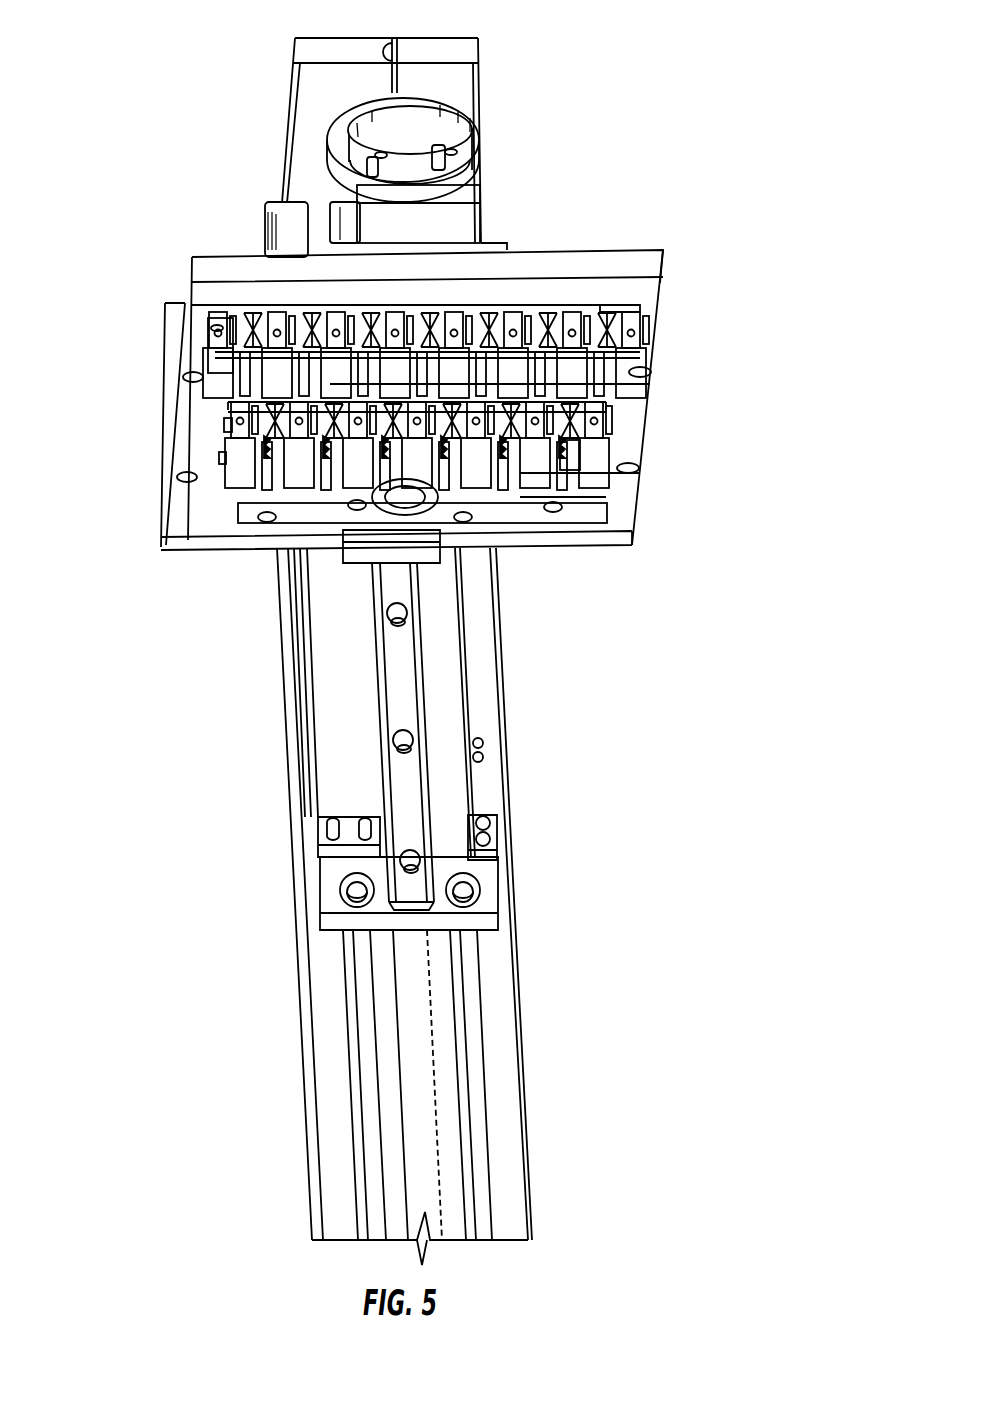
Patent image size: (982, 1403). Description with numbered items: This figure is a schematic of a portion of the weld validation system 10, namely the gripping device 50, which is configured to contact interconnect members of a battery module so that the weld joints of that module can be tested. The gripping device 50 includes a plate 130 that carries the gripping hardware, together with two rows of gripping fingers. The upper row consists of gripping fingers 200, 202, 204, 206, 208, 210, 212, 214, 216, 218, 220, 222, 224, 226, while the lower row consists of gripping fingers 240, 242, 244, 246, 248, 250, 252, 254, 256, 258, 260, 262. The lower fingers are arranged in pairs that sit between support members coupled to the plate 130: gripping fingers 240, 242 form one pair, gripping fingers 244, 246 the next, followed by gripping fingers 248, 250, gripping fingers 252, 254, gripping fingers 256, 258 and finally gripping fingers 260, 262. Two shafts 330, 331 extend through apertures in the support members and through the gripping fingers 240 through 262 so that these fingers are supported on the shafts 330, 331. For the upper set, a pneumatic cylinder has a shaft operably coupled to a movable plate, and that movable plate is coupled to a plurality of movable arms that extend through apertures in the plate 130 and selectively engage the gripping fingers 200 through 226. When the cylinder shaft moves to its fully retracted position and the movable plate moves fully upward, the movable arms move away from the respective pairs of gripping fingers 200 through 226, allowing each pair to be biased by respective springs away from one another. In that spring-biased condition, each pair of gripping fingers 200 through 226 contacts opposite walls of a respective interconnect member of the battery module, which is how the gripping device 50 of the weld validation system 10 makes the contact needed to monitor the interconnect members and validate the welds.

The weld validation system 10 is at (773, 72).
The gripping device 50 is at (742, 166).
The plate 130 is at (660, 283).
The gripping finger 200 is at (222, 323).
The gripping finger 202 is at (242, 323).
The gripping finger 204 is at (267, 323).
The gripping finger 206 is at (299, 323).
The gripping finger 208 is at (348, 322).
The gripping finger 210 is at (405, 323).
The gripping finger 212 is at (475, 318).
The gripping finger 214 is at (503, 318).
The gripping finger 216 is at (533, 318).
The gripping finger 218 is at (560, 318).
The gripping finger 220 is at (587, 318).
The gripping finger 222 is at (613, 312).
The gripping finger 224 is at (638, 295).
The gripping finger 226 is at (655, 275).
The gripping finger 240 is at (245, 473).
The gripping finger 242 is at (260, 423).
The gripping finger 244 is at (293, 450).
The gripping finger 246 is at (317, 460).
The gripping finger 248 is at (340, 480).
The gripping finger 250 is at (372, 495).
The gripping finger 252 is at (453, 500).
The gripping finger 254 is at (470, 495).
The gripping finger 256 is at (515, 473).
The gripping finger 258 is at (527, 477).
The gripping finger 260 is at (560, 453).
The gripping finger 262 is at (597, 437).
The shaft 330 is at (227, 428).
The shaft 331 is at (223, 460).